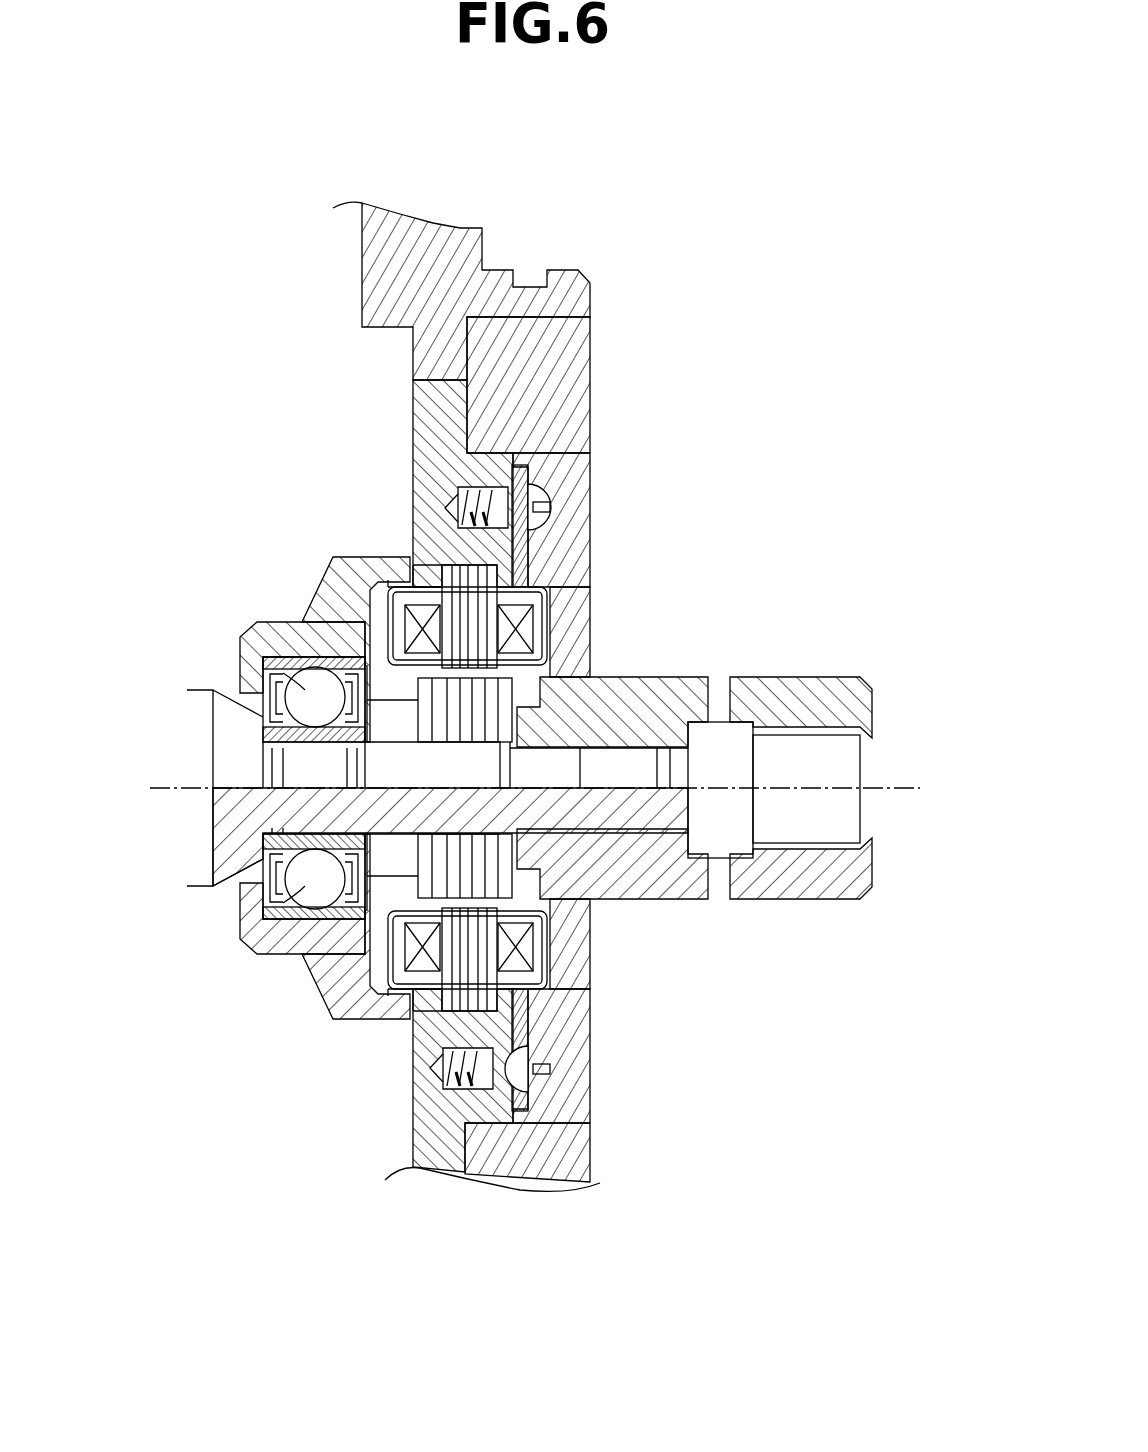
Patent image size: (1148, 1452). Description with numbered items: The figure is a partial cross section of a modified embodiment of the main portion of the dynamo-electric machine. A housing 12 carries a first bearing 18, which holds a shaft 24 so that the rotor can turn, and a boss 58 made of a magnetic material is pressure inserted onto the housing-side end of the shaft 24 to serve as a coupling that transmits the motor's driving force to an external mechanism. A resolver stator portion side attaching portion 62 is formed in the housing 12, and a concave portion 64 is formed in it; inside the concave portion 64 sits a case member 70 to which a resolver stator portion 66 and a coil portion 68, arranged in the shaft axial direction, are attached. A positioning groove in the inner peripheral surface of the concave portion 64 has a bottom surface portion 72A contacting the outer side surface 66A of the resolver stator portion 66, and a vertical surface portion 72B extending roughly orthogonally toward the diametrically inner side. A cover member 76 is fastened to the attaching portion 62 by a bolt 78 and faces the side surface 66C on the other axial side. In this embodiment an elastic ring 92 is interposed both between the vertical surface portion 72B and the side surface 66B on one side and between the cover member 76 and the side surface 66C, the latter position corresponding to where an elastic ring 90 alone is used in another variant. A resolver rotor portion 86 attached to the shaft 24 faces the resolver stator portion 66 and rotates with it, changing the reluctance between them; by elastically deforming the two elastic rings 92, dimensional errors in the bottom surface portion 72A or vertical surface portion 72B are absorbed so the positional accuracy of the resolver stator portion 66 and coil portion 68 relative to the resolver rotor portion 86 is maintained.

The housing 12 is at (500, 253).
The first bearing 18 is at (258, 640).
The shaft 24 is at (205, 690).
The boss 58 is at (803, 690).
The resolver stator portion side attaching portion 62 is at (403, 402).
The concave portion 64 is at (340, 622).
The resolver stator portion 66 is at (550, 597).
The outer side surface 66A is at (530, 465).
The side surface 66B is at (420, 585).
The side surface 66C is at (590, 557).
The coil portion 68 is at (530, 632).
The case member 70 is at (548, 592).
The bottom surface portion 72A is at (550, 500).
The vertical surface portion 72B is at (467, 580).
The cover member 76 is at (592, 348).
The bolt 78 is at (530, 467).
The resolver rotor portion 86 is at (507, 690).
The elastic ring 90 is at (553, 513).
The elastic ring 92 is at (440, 562).